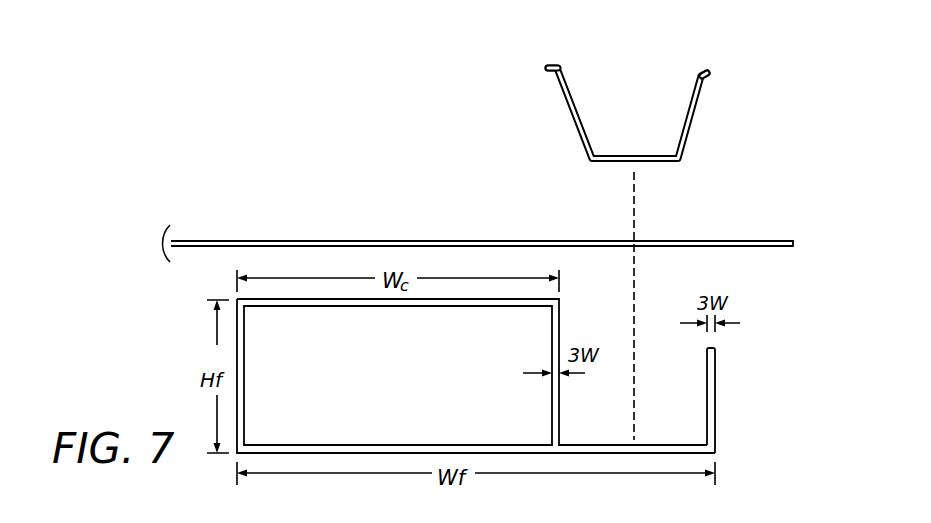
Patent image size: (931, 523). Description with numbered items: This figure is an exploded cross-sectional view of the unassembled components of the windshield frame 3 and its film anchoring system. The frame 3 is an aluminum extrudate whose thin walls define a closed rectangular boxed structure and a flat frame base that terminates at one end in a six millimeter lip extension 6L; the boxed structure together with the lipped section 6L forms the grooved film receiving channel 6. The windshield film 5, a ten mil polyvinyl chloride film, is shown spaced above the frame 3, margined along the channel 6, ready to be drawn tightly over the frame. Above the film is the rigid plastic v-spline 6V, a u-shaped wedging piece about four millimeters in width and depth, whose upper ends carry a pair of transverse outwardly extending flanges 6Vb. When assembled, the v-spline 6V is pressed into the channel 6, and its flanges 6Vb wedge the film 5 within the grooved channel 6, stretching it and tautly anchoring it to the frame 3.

The windshield frame 3 is at (236, 347).
The windshield film 5 is at (765, 240).
The film receiving channel 6 is at (686, 400).
The lip extension 6L is at (717, 398).
The v-spline 6V is at (620, 156).
The outwardly flanged section 6Vb is at (730, 52).